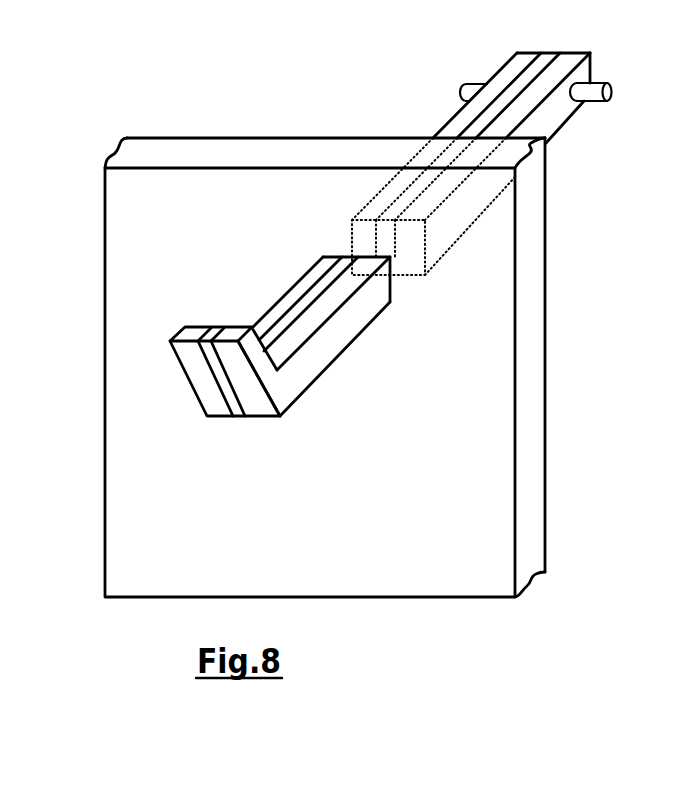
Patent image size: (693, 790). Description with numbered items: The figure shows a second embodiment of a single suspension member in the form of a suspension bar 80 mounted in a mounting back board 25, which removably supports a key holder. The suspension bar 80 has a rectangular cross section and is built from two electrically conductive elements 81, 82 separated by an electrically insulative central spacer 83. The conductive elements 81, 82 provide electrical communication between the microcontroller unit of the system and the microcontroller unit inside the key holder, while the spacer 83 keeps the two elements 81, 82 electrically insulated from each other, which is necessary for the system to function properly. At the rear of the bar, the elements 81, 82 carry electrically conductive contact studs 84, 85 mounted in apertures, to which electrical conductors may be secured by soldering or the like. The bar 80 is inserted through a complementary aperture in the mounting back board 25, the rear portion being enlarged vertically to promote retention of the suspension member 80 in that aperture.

The mounting back board 25 is at (367, 505).
The suspension bar 80 is at (211, 374).
The electrically conductive element 81 is at (218, 398).
The electrically conductive element 82 is at (258, 398).
The electrically insulative central spacer 83 is at (217, 368).
The electrically conductive contact stud 84 is at (467, 82).
The electrically conductive contact stud 85 is at (606, 82).